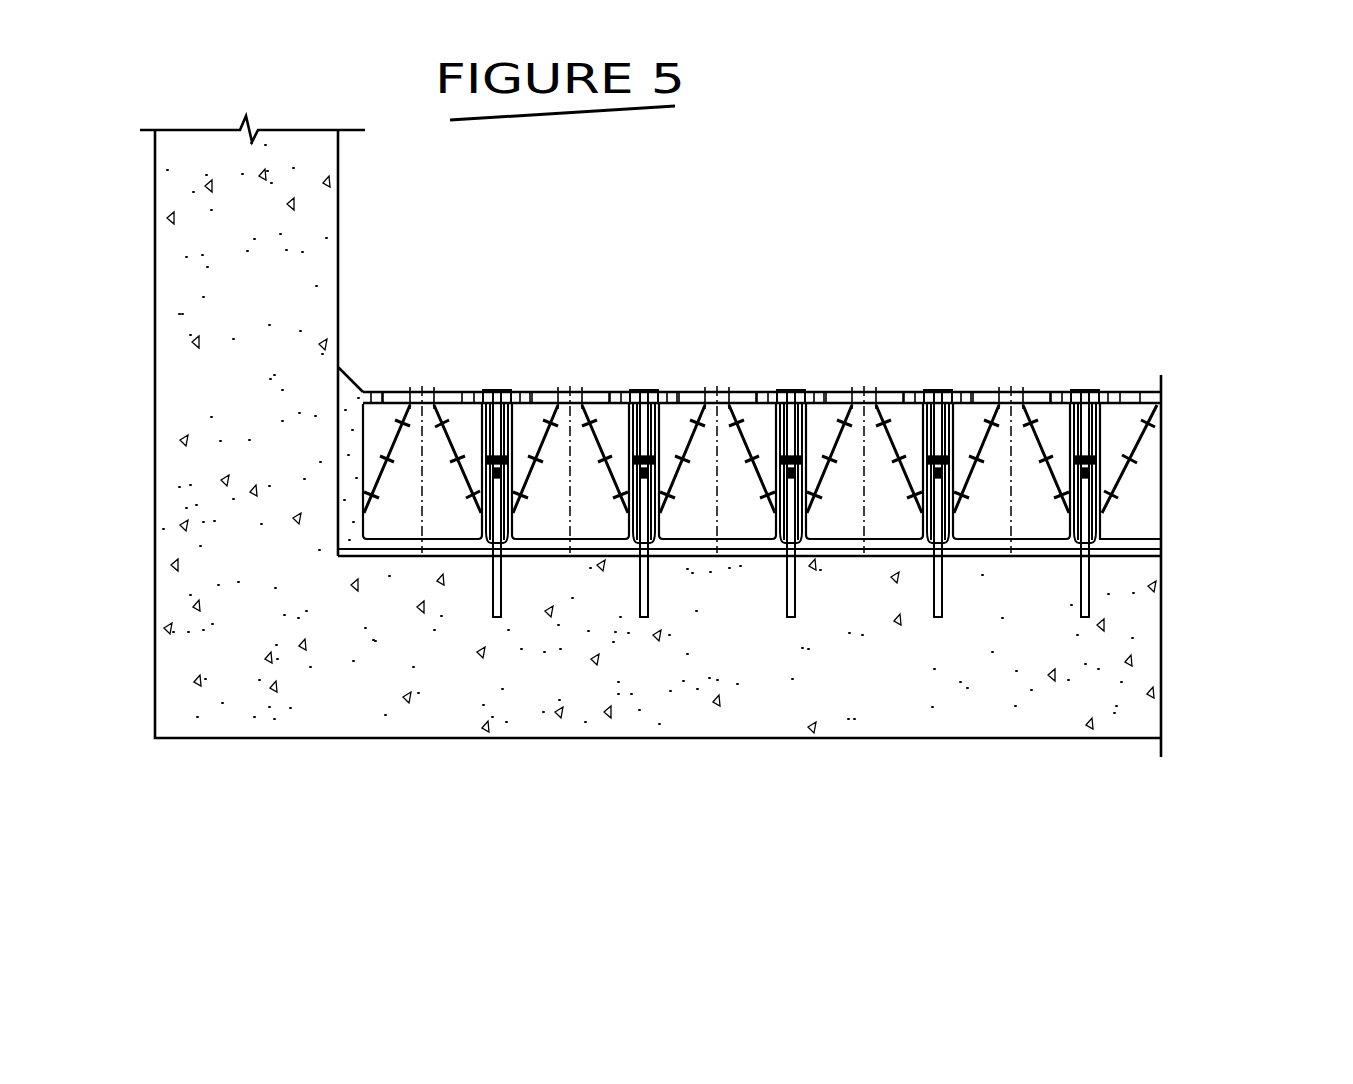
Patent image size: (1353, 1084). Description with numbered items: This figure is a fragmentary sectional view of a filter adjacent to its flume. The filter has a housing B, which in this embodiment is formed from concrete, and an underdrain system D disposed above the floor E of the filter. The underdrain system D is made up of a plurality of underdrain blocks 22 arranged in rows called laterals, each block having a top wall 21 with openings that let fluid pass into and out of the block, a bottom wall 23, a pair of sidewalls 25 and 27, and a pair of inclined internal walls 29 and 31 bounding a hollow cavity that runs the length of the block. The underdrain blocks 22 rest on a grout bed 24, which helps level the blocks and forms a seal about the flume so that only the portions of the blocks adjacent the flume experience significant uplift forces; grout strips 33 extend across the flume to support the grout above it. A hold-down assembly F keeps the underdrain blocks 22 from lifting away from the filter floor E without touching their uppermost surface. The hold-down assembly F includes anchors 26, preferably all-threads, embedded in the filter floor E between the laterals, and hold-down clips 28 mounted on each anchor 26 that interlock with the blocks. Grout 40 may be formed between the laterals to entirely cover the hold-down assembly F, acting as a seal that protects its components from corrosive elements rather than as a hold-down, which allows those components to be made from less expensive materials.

The underdrain blocks 22 is at (1030, 390).
The grout 40 is at (940, 392).
The anchors 26 is at (1105, 395).
The hold-down clips 28 is at (1100, 458).
The grout strips 33 is at (1105, 540).
The sidewall 25 is at (672, 395).
The top wall 21 is at (745, 395).
The inclined internal wall 31 is at (776, 395).
The bottom wall 23 is at (746, 528).
The sidewall 27 is at (787, 495).
The inclined internal wall 29 is at (668, 507).
The grout bed 24 is at (393, 548).
The filter floor E is at (558, 553).
The hold-down assembly F is at (485, 462).
The underdrain system D is at (668, 350).
The housing B is at (188, 598).